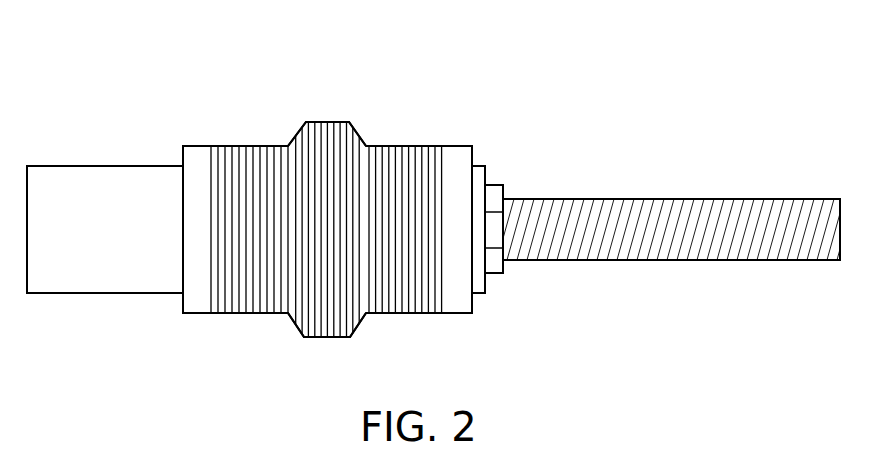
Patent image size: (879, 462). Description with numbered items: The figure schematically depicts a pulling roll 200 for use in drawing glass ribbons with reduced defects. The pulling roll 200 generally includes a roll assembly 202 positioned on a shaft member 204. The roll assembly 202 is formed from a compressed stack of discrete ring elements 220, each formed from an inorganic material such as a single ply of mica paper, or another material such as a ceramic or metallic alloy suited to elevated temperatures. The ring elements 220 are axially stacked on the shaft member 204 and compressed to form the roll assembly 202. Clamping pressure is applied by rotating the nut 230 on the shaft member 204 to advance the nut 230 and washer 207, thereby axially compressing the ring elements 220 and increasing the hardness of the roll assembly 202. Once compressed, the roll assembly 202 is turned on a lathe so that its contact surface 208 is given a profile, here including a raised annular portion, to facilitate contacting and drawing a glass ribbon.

The pulling roll 200 is at (493, 79).
The roll assembly 202 is at (231, 123).
The shaft member 204 is at (741, 199).
The washer 207 is at (485, 290).
The contact surface 208 is at (233, 237).
The ring elements 220 is at (304, 125).
The nut 230 is at (503, 185).